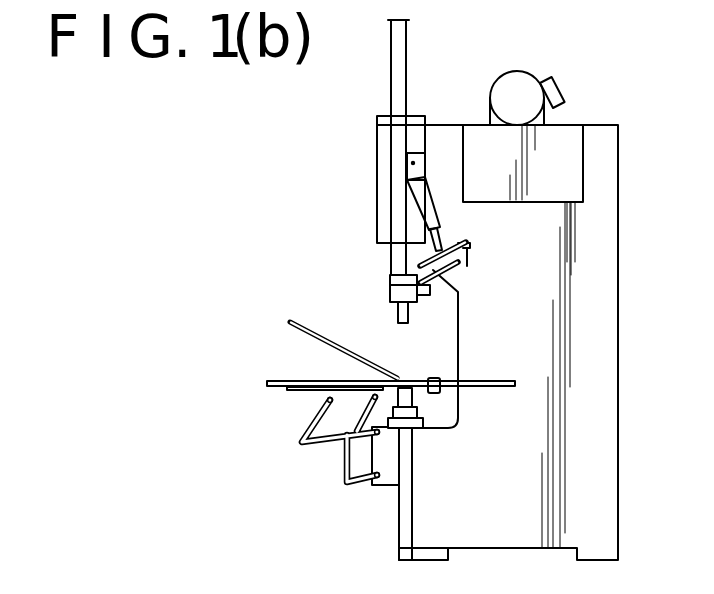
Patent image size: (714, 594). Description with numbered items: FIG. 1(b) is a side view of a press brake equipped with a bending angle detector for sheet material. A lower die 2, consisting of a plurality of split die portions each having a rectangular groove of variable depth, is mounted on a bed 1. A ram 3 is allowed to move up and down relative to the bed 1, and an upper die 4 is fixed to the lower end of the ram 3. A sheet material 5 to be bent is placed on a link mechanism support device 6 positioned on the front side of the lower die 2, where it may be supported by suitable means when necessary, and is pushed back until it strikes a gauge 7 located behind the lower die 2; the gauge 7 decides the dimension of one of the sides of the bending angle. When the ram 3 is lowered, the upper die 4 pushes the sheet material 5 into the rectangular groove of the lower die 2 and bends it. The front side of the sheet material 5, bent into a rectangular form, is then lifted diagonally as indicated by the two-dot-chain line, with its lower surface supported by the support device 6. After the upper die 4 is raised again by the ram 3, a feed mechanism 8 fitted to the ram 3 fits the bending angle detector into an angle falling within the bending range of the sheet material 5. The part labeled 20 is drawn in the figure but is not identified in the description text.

The bed 1 is at (408, 470).
The lower die 2 is at (412, 398).
The ram 3 is at (393, 262).
The upper die 4 is at (397, 313).
The sheet material 5 is at (298, 380).
The link mechanism support device 6 is at (347, 476).
The gauge 7 is at (475, 382).
The feed mechanism 8 is at (468, 257).
The stopper 20 is at (430, 293).